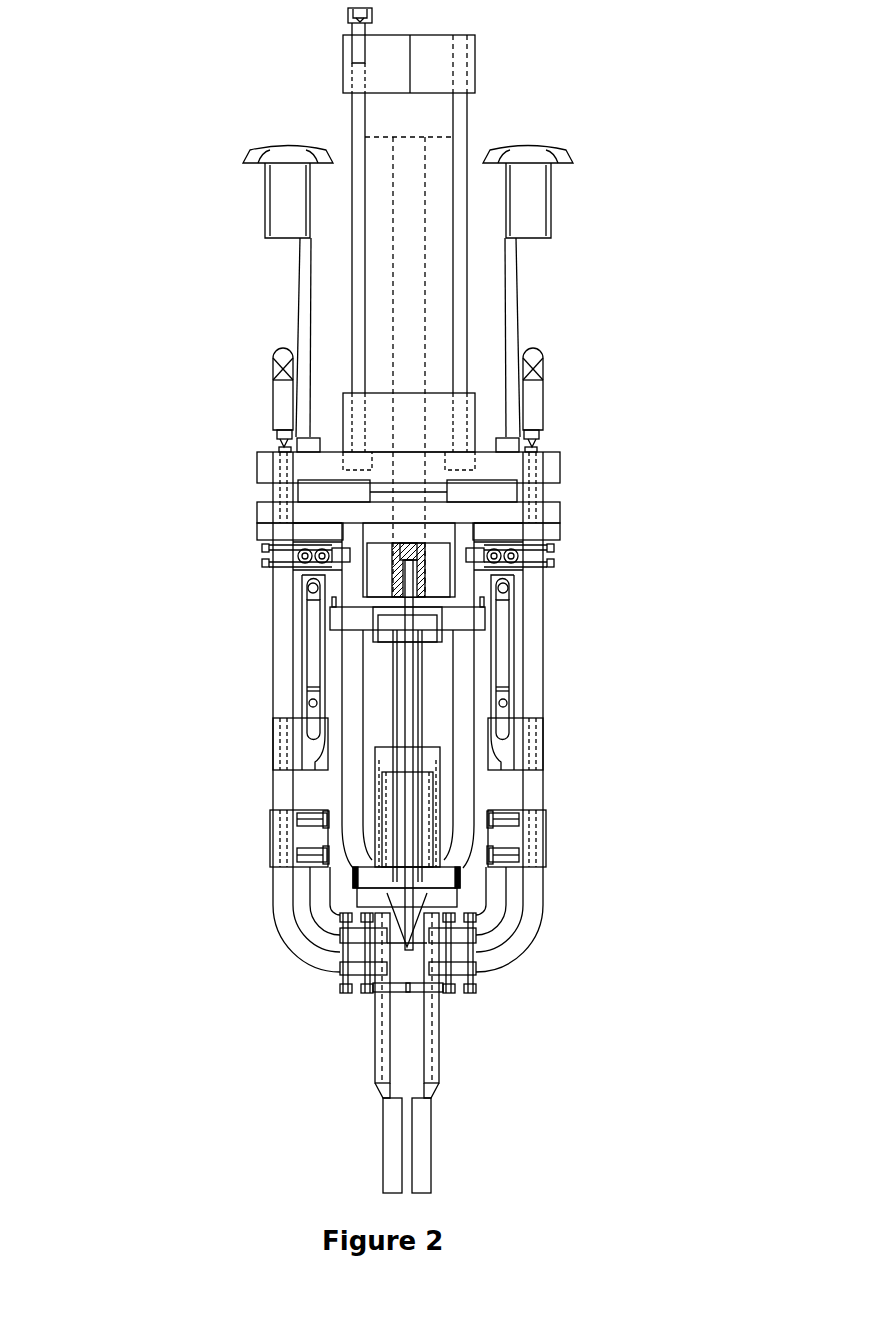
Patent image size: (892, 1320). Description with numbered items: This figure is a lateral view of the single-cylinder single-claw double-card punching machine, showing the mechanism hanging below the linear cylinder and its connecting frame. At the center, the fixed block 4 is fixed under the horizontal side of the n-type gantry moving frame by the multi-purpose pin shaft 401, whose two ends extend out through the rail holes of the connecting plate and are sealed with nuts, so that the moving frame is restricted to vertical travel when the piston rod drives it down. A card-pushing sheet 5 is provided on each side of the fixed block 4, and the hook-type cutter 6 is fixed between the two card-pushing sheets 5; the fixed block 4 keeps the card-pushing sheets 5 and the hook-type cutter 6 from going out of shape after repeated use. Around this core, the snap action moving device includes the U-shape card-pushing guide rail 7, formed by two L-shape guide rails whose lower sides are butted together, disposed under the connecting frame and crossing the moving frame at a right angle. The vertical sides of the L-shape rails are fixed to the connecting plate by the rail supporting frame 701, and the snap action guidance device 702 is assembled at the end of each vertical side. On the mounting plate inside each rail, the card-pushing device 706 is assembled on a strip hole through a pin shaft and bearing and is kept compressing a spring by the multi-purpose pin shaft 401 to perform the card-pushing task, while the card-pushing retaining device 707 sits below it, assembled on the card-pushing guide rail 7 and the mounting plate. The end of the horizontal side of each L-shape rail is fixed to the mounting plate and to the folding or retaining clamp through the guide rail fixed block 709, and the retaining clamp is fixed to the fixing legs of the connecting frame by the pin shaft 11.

The snap action guidance device 702 is at (340, 279).
The U-shape card-pushing guide rail 7 is at (325, 701).
The rail supporting frame 701 is at (444, 485).
The multi-purpose pin shaft 401 is at (330, 483).
The fixed block 4 is at (433, 601).
The card-pushing sheet 5 is at (427, 708).
The hook-type cutter 6 is at (410, 838).
The pin shaft 11 is at (492, 837).
The card-pushing device 706 is at (325, 670).
The card-pushing retaining device 707 is at (326, 784).
The guide rail fixed block 709 is at (291, 967).